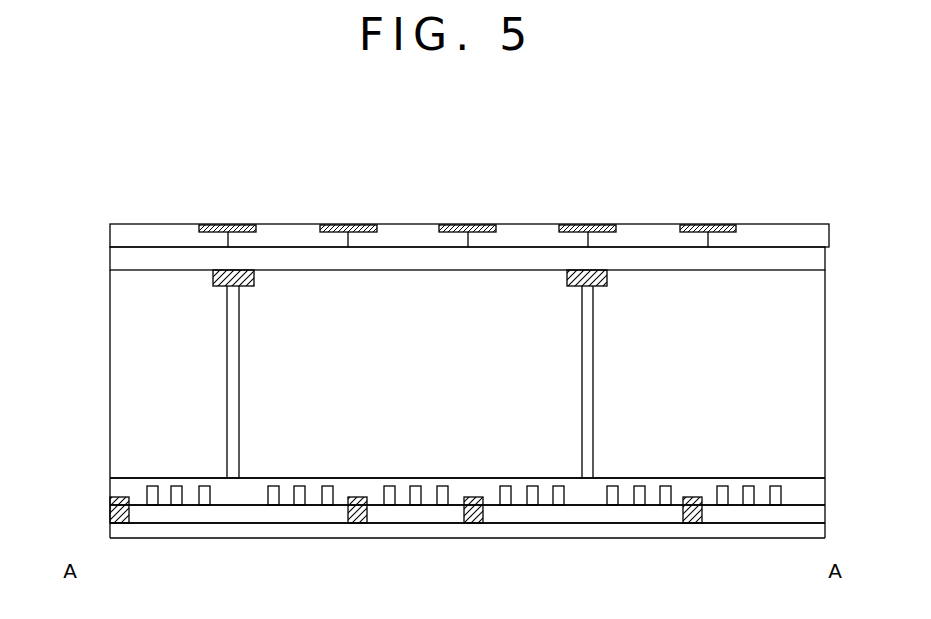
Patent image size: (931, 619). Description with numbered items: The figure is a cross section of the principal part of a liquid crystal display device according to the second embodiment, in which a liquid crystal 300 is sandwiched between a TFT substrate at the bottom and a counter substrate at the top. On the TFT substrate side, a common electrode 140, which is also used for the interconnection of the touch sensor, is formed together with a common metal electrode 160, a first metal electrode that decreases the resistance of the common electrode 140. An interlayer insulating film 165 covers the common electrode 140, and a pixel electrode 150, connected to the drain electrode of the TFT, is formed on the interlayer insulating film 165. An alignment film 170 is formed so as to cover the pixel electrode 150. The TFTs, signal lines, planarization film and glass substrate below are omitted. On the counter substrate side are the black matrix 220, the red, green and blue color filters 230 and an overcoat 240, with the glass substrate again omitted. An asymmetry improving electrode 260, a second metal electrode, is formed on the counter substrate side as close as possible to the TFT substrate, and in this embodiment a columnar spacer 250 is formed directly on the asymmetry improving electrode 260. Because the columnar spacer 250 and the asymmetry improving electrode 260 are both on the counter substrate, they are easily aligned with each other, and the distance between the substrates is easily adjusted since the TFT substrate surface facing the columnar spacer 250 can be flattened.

The common electrode 140 is at (172, 531).
The pixel electrode 150 is at (299, 500).
The common metal electrode 160 is at (121, 521).
The interlayer insulating film 165 is at (232, 513).
The alignment film 170 is at (111, 488).
The black matrix 220 is at (470, 225).
The color filters 230 is at (150, 227).
The overcoat 240 is at (122, 262).
The columnar spacer 250 is at (228, 397).
The asymmetry improving electrode 260 is at (233, 278).
The liquid crystal 300 is at (726, 378).